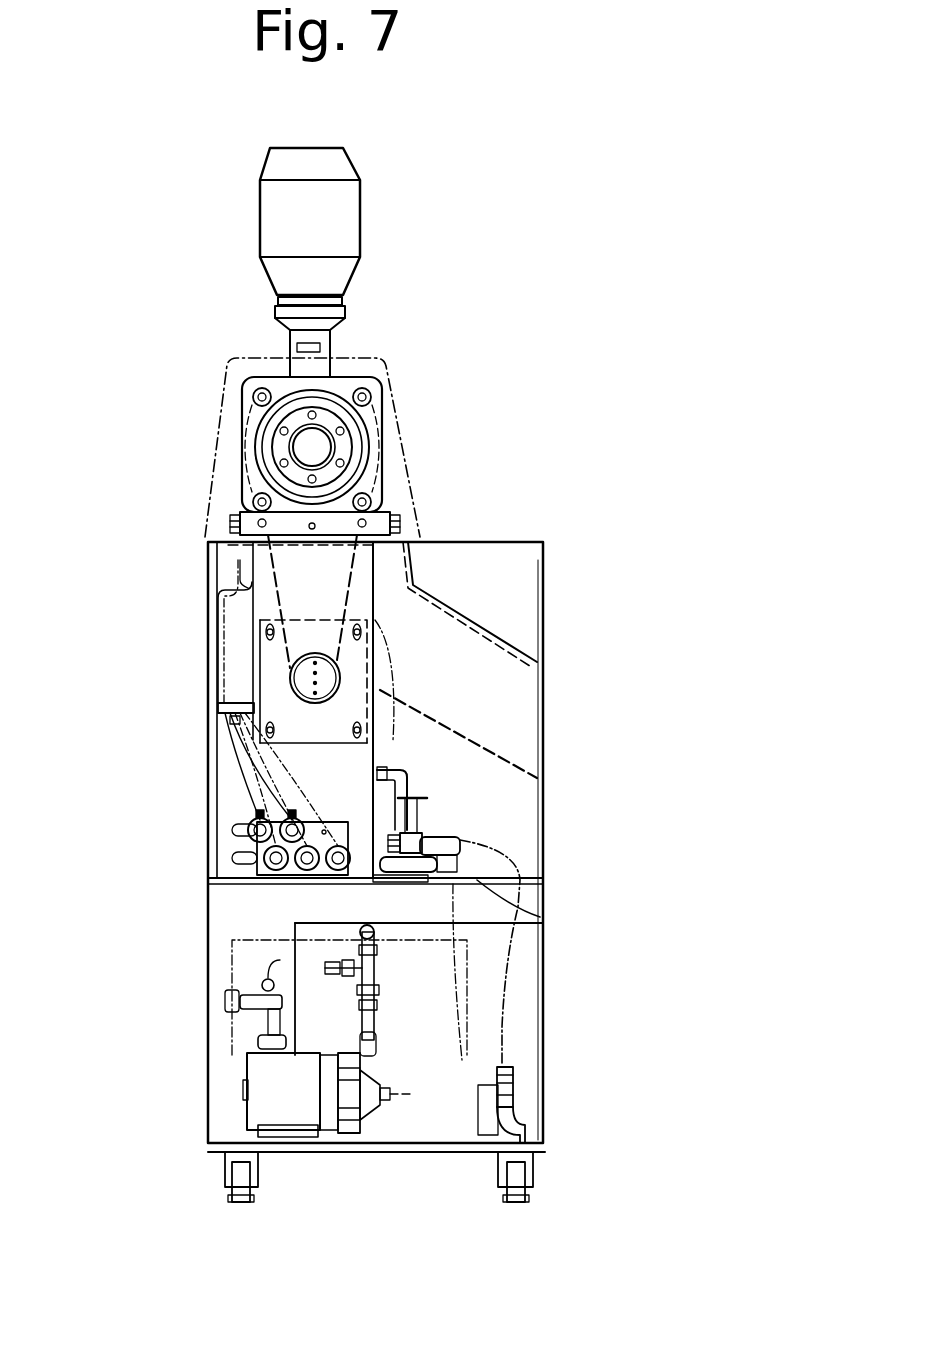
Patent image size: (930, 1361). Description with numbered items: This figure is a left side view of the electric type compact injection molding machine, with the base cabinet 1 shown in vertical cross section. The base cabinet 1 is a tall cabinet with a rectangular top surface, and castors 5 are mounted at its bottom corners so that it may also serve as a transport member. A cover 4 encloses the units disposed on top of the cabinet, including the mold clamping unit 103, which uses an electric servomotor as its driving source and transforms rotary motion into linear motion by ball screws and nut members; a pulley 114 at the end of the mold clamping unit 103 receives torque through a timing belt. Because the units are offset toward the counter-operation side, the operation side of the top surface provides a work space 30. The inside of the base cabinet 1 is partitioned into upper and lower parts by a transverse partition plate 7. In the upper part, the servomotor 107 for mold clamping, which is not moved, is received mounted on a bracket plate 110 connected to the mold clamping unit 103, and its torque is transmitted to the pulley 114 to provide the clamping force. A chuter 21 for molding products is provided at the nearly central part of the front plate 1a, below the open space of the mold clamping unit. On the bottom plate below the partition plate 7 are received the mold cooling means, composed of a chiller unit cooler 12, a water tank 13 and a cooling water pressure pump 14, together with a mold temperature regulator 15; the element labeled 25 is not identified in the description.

The base cabinet 1 is at (207, 628).
The front plate 1a is at (543, 825).
The cover 4 is at (216, 428).
The castors 5 is at (243, 1175).
The partition plate 7 is at (540, 917).
The chiller unit cooler 12 is at (423, 1062).
The water tank 13 is at (240, 799).
The cooling water pressure pump 14 is at (330, 1113).
The mold temperature regulator 15 is at (522, 1032).
The chuter 21 is at (505, 710).
The hopper 25 is at (332, 217).
The work space 30 is at (520, 540).
The mold clamping unit 103 is at (399, 415).
The servomotor for mold clamping 107 is at (222, 731).
The bracket plate 110 is at (245, 659).
The pulley 114 is at (362, 457).